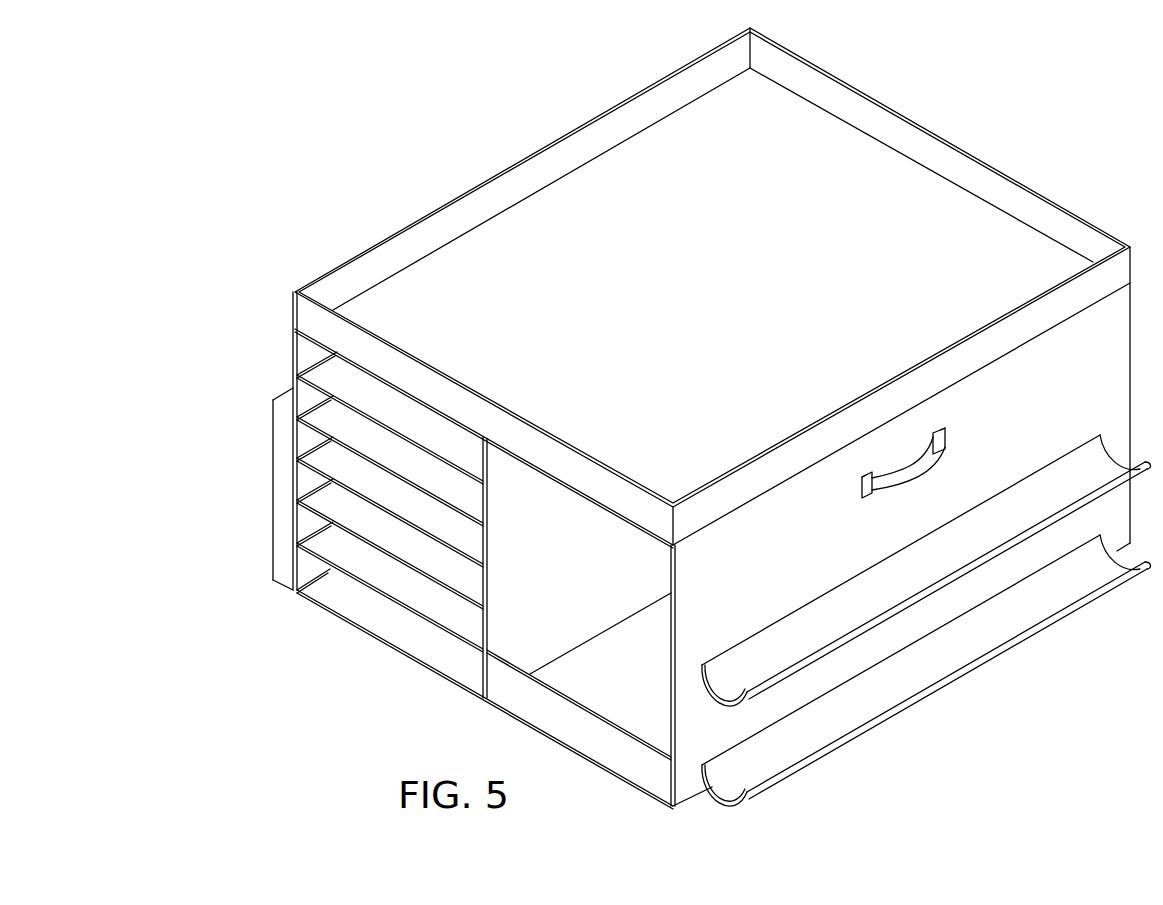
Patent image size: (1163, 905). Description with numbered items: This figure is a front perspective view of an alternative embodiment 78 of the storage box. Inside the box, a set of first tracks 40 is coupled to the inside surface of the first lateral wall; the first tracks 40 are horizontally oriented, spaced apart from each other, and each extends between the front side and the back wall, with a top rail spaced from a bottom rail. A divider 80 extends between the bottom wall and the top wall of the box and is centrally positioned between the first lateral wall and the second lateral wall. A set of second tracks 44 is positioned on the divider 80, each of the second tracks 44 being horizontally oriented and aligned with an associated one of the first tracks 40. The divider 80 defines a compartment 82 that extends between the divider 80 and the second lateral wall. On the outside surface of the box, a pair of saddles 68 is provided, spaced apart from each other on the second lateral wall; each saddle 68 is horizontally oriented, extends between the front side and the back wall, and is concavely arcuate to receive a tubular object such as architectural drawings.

The alternative embodiment 78 is at (374, 90).
The first tracks 40 is at (318, 532).
The second tracks 44 is at (481, 613).
The divider 80 is at (519, 628).
The compartment 82 is at (610, 666).
The saddle 68 is at (800, 678).